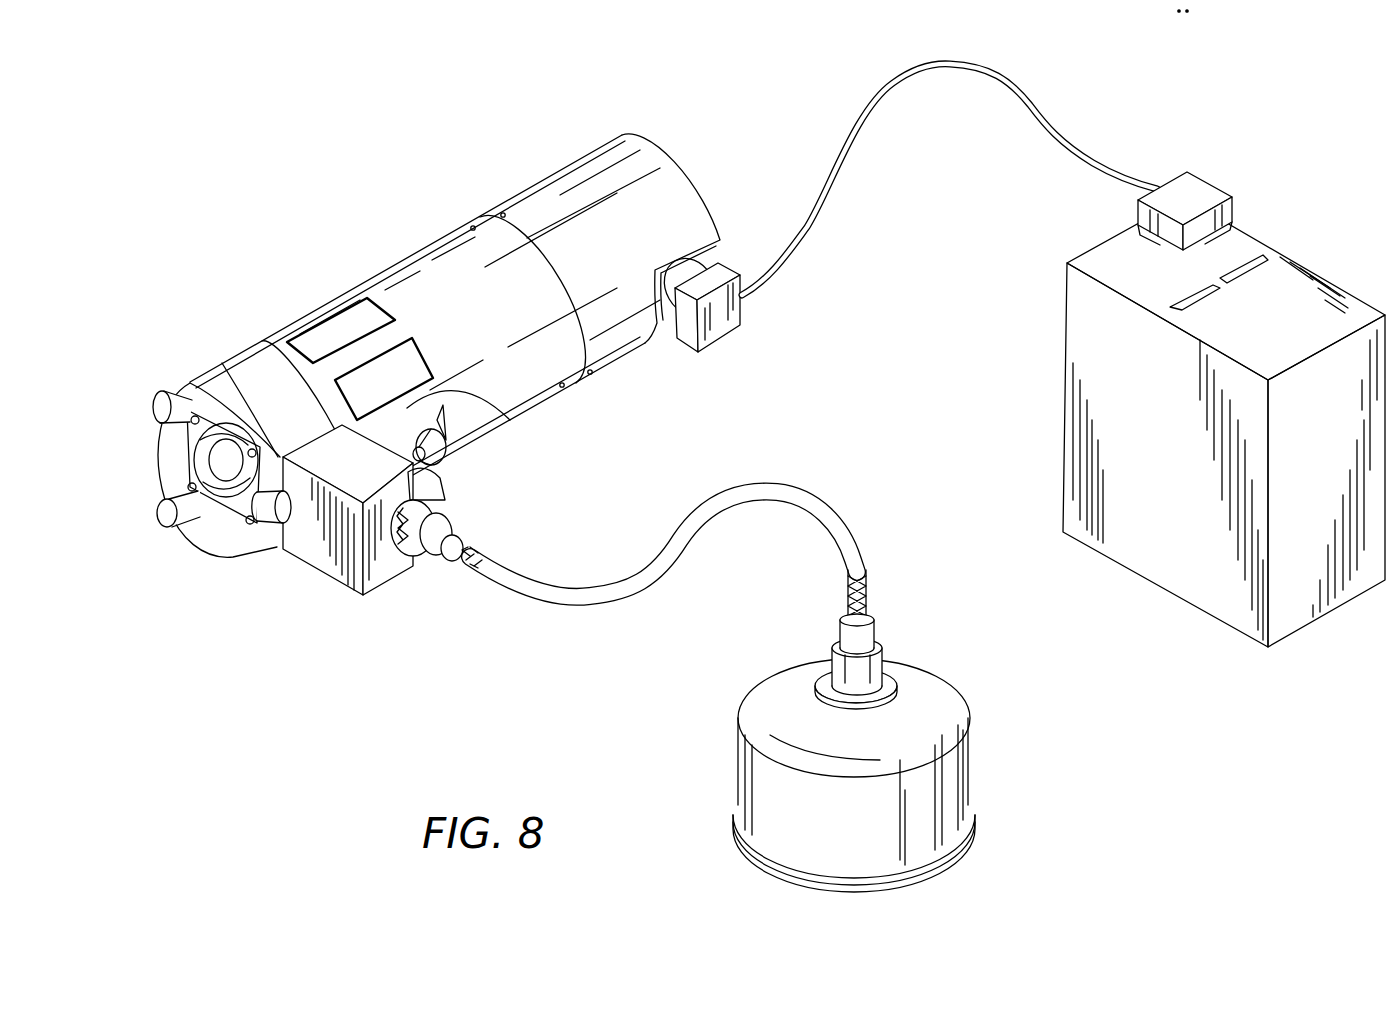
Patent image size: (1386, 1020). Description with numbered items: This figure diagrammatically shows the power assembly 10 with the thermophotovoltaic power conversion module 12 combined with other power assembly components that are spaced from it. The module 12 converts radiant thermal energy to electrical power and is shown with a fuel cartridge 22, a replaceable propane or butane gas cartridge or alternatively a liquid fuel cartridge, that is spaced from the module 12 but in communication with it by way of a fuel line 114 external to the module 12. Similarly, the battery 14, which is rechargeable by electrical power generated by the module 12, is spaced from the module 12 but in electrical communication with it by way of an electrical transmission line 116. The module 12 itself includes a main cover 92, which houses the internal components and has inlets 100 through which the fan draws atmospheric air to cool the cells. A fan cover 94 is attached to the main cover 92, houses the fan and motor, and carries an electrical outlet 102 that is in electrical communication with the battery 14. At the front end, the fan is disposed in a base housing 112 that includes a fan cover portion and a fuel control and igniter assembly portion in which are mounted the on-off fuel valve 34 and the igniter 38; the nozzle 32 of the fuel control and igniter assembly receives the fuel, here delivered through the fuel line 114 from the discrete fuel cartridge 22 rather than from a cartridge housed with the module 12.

The power assembly 10 is at (383, 158).
The thermophotovoltaic power conversion module 12 is at (400, 258).
The battery 14 is at (1087, 345).
The fuel cartridge 22 is at (943, 717).
The nozzle 32 is at (460, 522).
The on-off fuel valve 34 is at (455, 450).
The igniter 38 is at (512, 418).
The main cover 92 is at (478, 260).
The fan cover 94 is at (593, 185).
The inlets 100 is at (326, 340).
The electrical outlet 102 is at (718, 323).
The base housing 112 is at (316, 550).
The fuel line 114 is at (840, 517).
The electrical transmission line 116 is at (852, 120).